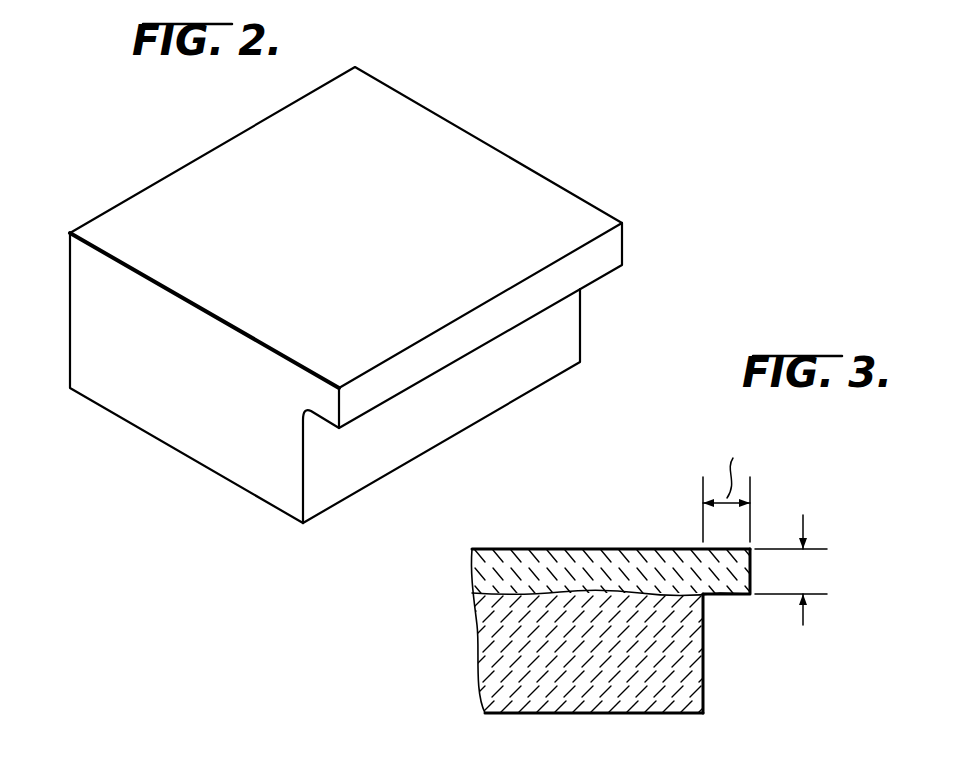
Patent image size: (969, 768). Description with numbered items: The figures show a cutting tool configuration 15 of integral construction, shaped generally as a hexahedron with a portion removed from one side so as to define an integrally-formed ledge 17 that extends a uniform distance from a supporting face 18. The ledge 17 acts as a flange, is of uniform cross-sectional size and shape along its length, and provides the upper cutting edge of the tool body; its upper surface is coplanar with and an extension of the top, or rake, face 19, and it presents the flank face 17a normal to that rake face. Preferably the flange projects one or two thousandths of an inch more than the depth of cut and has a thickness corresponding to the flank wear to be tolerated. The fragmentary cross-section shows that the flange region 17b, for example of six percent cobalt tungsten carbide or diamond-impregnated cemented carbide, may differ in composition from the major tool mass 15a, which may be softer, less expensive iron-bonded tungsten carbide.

In FIG. 2, the cutting tool configuration 15 is at (462, 114).
In FIG. 3, the cutting tool configuration 15 is at (708, 688).
In FIG. 3, the major part of the tool mass 15a is at (505, 653).
In FIG. 2, the ledge 17 is at (325, 407).
In FIG. 3, the ledge 17 is at (735, 586).
In FIG. 2, the flank face 17a is at (605, 258).
In FIG. 3, the flange portion of different composition 17b is at (493, 570).
In FIG. 2, the supporting face 18 is at (395, 447).
In FIG. 3, the supporting face 18 is at (703, 650).
In FIG. 2, the rake face 19 is at (243, 223).
In FIG. 3, the rake face 19 is at (632, 548).